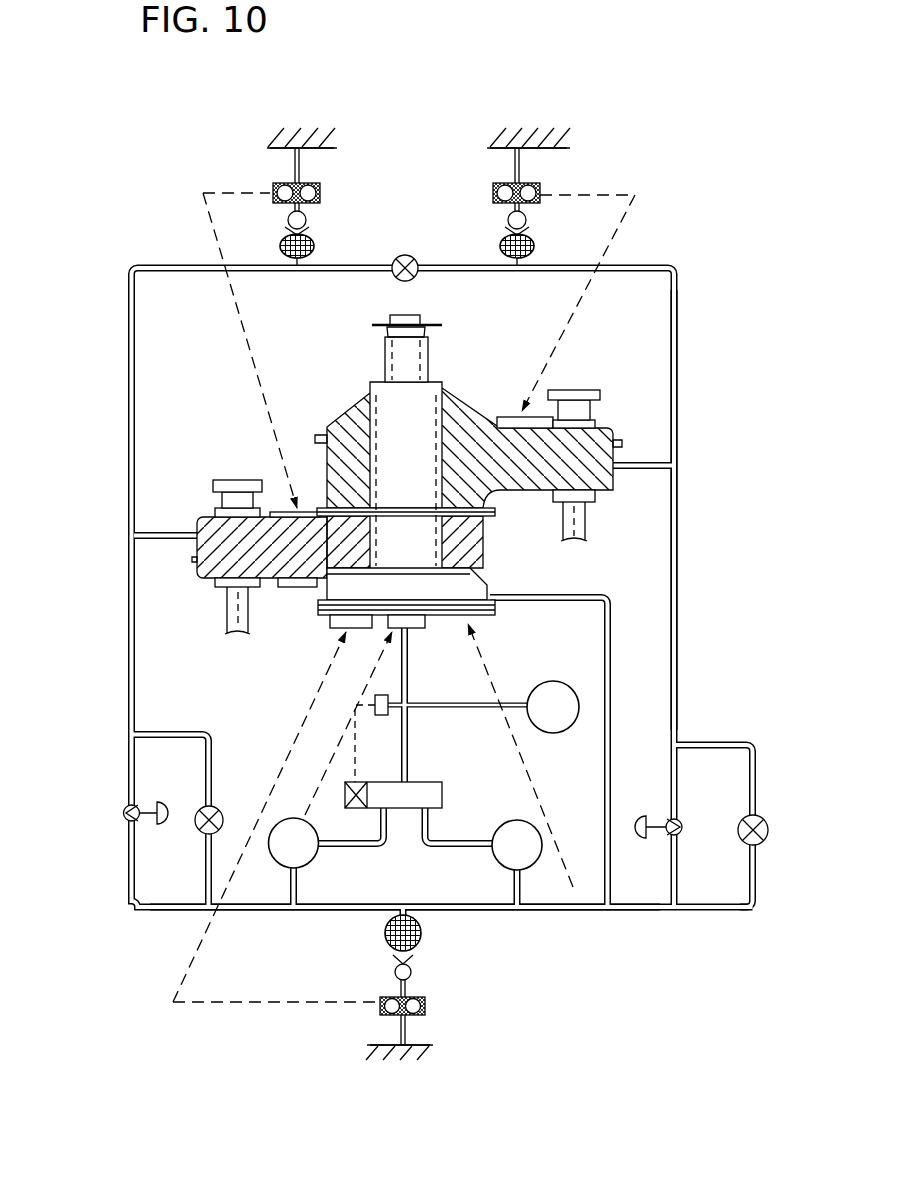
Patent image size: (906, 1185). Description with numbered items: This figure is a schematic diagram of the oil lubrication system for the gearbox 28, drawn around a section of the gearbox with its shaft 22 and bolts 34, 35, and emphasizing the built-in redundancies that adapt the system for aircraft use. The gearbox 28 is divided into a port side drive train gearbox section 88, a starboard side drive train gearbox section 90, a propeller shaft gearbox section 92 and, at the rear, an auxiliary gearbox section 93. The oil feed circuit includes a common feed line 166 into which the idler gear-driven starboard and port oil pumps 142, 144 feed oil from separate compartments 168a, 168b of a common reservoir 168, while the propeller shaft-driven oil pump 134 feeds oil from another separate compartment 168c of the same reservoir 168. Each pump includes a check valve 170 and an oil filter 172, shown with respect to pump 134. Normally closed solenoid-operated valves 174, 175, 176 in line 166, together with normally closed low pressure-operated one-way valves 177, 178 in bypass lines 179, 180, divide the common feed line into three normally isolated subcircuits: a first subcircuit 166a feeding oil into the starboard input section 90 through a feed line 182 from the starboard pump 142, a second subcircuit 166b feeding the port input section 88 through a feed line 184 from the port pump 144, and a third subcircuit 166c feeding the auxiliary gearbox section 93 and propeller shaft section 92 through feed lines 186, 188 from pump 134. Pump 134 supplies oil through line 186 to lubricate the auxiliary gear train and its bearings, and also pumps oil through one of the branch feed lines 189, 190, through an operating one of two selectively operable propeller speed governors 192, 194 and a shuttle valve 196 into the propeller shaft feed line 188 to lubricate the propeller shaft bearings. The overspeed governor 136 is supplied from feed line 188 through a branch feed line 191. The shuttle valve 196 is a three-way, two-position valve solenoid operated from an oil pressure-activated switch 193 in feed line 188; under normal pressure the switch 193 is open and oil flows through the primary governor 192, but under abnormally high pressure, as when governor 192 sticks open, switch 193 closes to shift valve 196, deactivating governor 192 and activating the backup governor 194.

The shaft 22 is at (428, 343).
The gearbox 28 is at (406, 474).
The bolt 34 is at (587, 530).
The bolt 35 is at (228, 612).
The port side drive train gearbox section 88 is at (197, 510).
The starboard side drive train gearbox section 90 is at (605, 427).
The propeller shaft gearbox section 92 is at (368, 379).
The auxiliary gearbox section 93 is at (497, 582).
The propeller shaft-driven oil pump 134 is at (378, 1012).
The overspeed governor 136 is at (556, 680).
The starboard oil pump 142 is at (547, 178).
The port oil pump 144 is at (270, 178).
The common feed line 166 is at (124, 584).
The first subcircuit 166a is at (678, 492).
The second subcircuit 166b is at (129, 376).
The third subcircuit 166c is at (242, 911).
The common reservoir 168 is at (479, 137).
The reservoir compartment 168a is at (547, 140).
The reservoir compartment 168b is at (297, 140).
The reservoir compartment 168c is at (366, 1050).
The check valve 170 is at (411, 972).
The oil filter 172 is at (423, 933).
The solenoid-operated valve 174 is at (405, 255).
The solenoid-operated valve 175 is at (761, 818).
The solenoid-operated valve 176 is at (218, 808).
The one-way valve 177 is at (126, 808).
The one-way valve 178 is at (679, 820).
The bypass line 179 is at (213, 738).
The bypass line 180 is at (679, 765).
The feed line 182 is at (652, 463).
The feed line 184 is at (150, 533).
The feed line 186 is at (612, 708).
The propeller shaft feed line 188 is at (408, 667).
The branch feed line 189 is at (298, 880).
The branch feed line 190 is at (512, 884).
The branch feed line 191 is at (515, 703).
The primary governor 192 is at (292, 818).
The pressure switch 193 is at (382, 693).
The backup governor 194 is at (515, 820).
The shuttle valve 196 is at (428, 782).